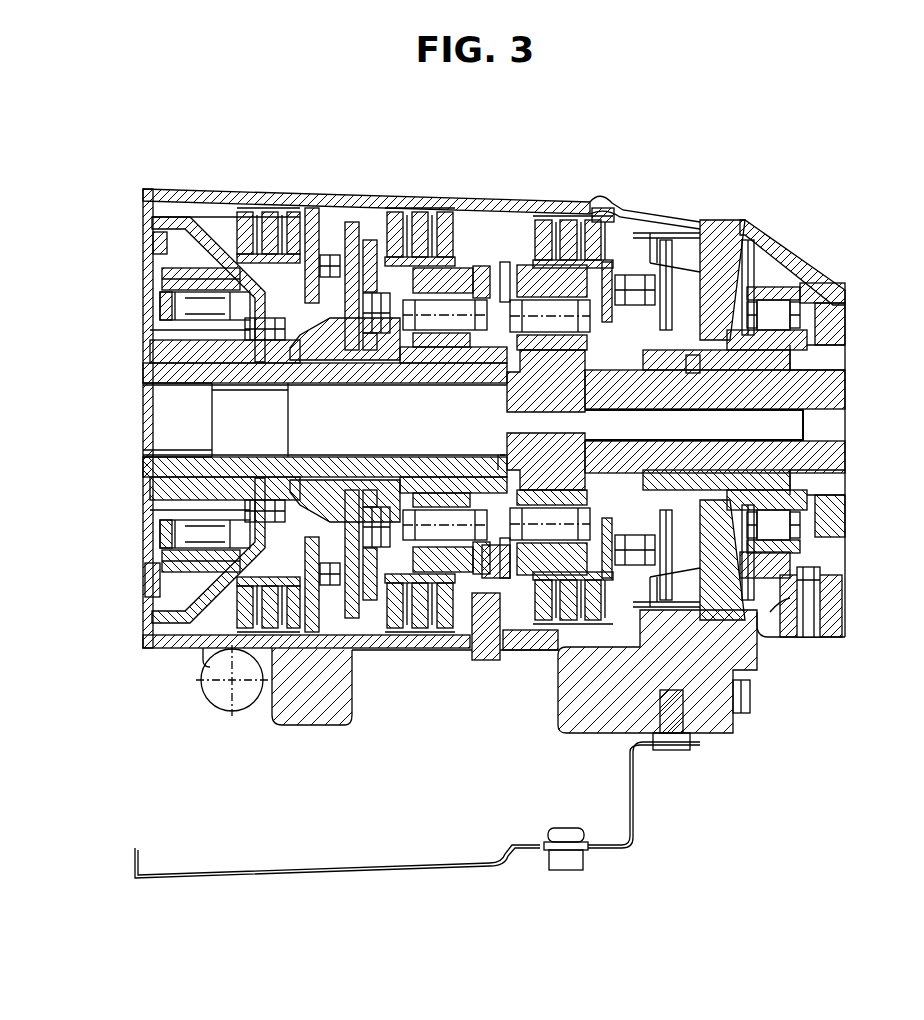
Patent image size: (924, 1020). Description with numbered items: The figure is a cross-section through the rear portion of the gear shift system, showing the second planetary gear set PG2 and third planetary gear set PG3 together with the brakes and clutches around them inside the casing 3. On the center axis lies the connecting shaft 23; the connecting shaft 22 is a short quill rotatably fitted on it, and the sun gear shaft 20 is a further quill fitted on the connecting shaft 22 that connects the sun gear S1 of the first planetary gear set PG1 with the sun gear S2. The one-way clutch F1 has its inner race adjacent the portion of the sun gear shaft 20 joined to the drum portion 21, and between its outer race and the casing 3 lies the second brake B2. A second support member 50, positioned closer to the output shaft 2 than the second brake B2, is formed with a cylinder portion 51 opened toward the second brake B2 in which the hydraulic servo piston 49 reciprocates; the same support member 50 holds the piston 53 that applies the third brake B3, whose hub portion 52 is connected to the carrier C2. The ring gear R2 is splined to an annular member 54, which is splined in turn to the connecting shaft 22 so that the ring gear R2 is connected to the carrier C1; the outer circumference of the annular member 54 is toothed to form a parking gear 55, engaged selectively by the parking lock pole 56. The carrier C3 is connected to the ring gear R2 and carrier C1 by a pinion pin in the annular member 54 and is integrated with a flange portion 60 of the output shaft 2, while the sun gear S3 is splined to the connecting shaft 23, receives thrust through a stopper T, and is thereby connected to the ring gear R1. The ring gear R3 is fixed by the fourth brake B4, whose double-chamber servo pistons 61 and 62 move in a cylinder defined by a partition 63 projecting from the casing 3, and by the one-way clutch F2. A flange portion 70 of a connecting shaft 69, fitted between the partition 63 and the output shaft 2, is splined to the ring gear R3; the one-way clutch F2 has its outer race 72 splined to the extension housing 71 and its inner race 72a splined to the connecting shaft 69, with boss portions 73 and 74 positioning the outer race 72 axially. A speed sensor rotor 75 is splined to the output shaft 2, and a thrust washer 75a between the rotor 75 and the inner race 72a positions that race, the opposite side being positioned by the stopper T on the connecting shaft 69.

The output shaft 2 is at (826, 396).
The casing 3 is at (262, 190).
The sun gear shaft 20 is at (314, 360).
The drum portion 21 is at (178, 222).
The connecting shaft 22 is at (173, 385).
The connecting shaft 23 is at (185, 420).
The hydraulic servo piston 49 is at (322, 226).
The second support member 50 is at (342, 570).
The cylinder portion 51 is at (302, 690).
The hub portion 52 is at (411, 262).
The piston 53 is at (373, 232).
The annular member 54 is at (498, 568).
The parking gear 55 is at (488, 628).
The parking lock pole 56 is at (472, 662).
The flange portion 60 is at (546, 420).
The piston 61 is at (574, 733).
The piston 62 is at (762, 625).
The partition 63 is at (708, 268).
The connecting shaft 69 is at (692, 364).
The flange portion 70 is at (642, 292).
The extension housing 71 is at (800, 265).
The outer race 72 is at (772, 586).
The inner race 72a is at (822, 340).
The boss portion 73 is at (728, 302).
The boss portion 74 is at (823, 284).
The rotor 75 is at (835, 543).
The thrust washer 75a is at (810, 360).
The second brake B2 is at (247, 207).
The third brake B3 is at (402, 205).
The fourth brake B4 is at (586, 216).
The carrier C1 is at (153, 303).
The carrier C2 is at (462, 582).
The carrier C3 is at (590, 312).
The one-way clutch F1 is at (262, 350).
The one-way clutch F2 is at (770, 312).
The first planetary gear set PG1 is at (182, 578).
The second planetary gear set PG2 is at (468, 256).
The third planetary gear set PG3 is at (518, 256).
The ring gear R1 is at (172, 272).
The ring gear R2 is at (430, 566).
The ring gear R3 is at (522, 264).
The sun gear S1 is at (155, 352).
The sun gear S2 is at (406, 364).
The sun gear S3 is at (535, 365).
The stopper T is at (713, 362).